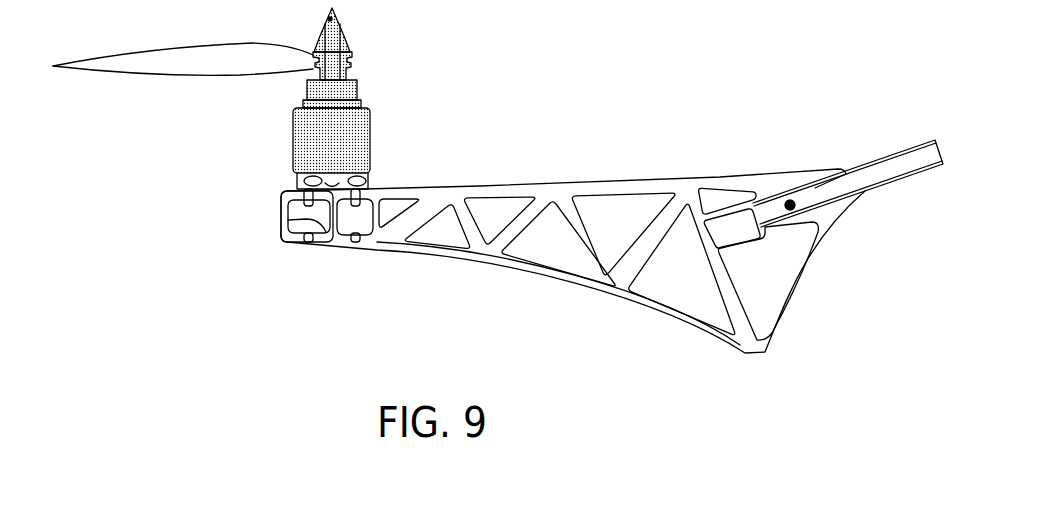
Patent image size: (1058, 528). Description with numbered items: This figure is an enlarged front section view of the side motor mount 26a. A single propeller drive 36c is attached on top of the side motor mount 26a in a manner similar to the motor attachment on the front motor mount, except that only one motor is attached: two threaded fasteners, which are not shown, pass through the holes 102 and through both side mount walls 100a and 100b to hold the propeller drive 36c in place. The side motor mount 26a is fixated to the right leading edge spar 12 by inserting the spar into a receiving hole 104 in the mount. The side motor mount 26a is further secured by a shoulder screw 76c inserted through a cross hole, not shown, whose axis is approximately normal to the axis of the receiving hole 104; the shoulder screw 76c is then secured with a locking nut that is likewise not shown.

The right leading edge spar 12 is at (888, 152).
The side motor mount 26a is at (540, 187).
The propeller drive 36c is at (290, 131).
The shoulder screw 76c is at (790, 200).
The side mount wall 100a is at (283, 201).
The side mount wall 100b is at (289, 220).
The holes 102 is at (306, 243).
The receiving hole 104 is at (735, 224).